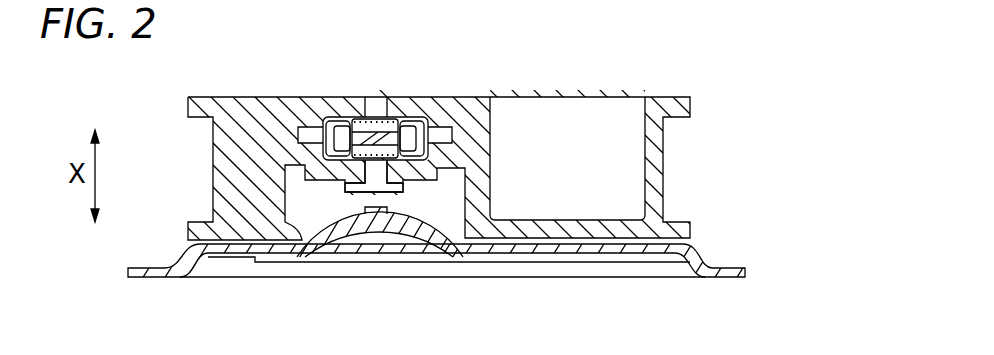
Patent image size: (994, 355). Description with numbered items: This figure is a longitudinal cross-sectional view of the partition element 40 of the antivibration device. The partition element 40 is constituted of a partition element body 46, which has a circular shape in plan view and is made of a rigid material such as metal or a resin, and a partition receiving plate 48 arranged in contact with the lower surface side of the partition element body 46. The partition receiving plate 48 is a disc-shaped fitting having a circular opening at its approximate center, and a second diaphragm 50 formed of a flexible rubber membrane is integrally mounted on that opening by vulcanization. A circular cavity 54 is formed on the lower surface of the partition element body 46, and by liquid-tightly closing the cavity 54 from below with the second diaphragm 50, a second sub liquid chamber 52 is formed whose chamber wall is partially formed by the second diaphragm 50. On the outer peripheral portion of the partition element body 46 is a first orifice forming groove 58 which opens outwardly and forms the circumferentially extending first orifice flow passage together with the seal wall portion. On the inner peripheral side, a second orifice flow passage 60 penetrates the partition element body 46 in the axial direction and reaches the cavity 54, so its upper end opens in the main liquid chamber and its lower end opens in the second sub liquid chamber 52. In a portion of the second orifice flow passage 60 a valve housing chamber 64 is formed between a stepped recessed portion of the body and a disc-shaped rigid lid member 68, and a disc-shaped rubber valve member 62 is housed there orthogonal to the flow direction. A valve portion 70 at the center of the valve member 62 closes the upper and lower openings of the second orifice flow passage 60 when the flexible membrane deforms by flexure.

The partition element 40 is at (442, 42).
The partition element body 46 is at (657, 97).
The partition receiving plate 48 is at (700, 277).
The second diaphragm 50 is at (342, 235).
The second sub liquid chamber 52 is at (447, 218).
The cavity 54 is at (330, 230).
The first orifice forming groove 58 is at (212, 137).
The second orifice flow passage 60 is at (374, 98).
The valve member 62 is at (412, 118).
The valve housing chamber 64 is at (440, 118).
The lid member 68 is at (303, 118).
The valve portion 70 is at (388, 166).